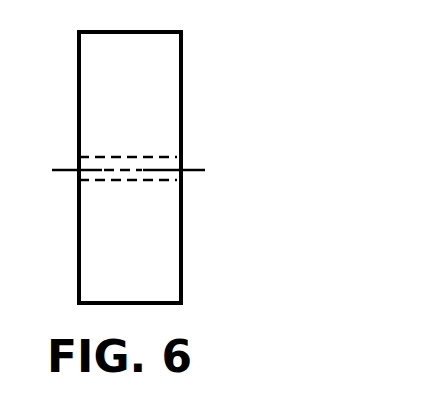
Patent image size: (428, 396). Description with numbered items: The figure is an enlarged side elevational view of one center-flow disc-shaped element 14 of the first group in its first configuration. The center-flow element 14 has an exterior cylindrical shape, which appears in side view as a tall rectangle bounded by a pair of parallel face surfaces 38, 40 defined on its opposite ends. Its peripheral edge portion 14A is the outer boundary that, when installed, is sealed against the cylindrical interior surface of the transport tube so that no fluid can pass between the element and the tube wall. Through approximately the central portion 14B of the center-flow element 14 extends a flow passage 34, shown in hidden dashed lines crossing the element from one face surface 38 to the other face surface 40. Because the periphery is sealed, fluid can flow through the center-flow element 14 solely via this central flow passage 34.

The center-flow disc-shaped element 14 is at (190, 276).
The peripheral edge portion 14A is at (165, 28).
The central portion 14B is at (163, 191).
The flow passage 34 is at (119, 156).
The face surface 38 is at (78, 227).
The face surface 40 is at (183, 236).